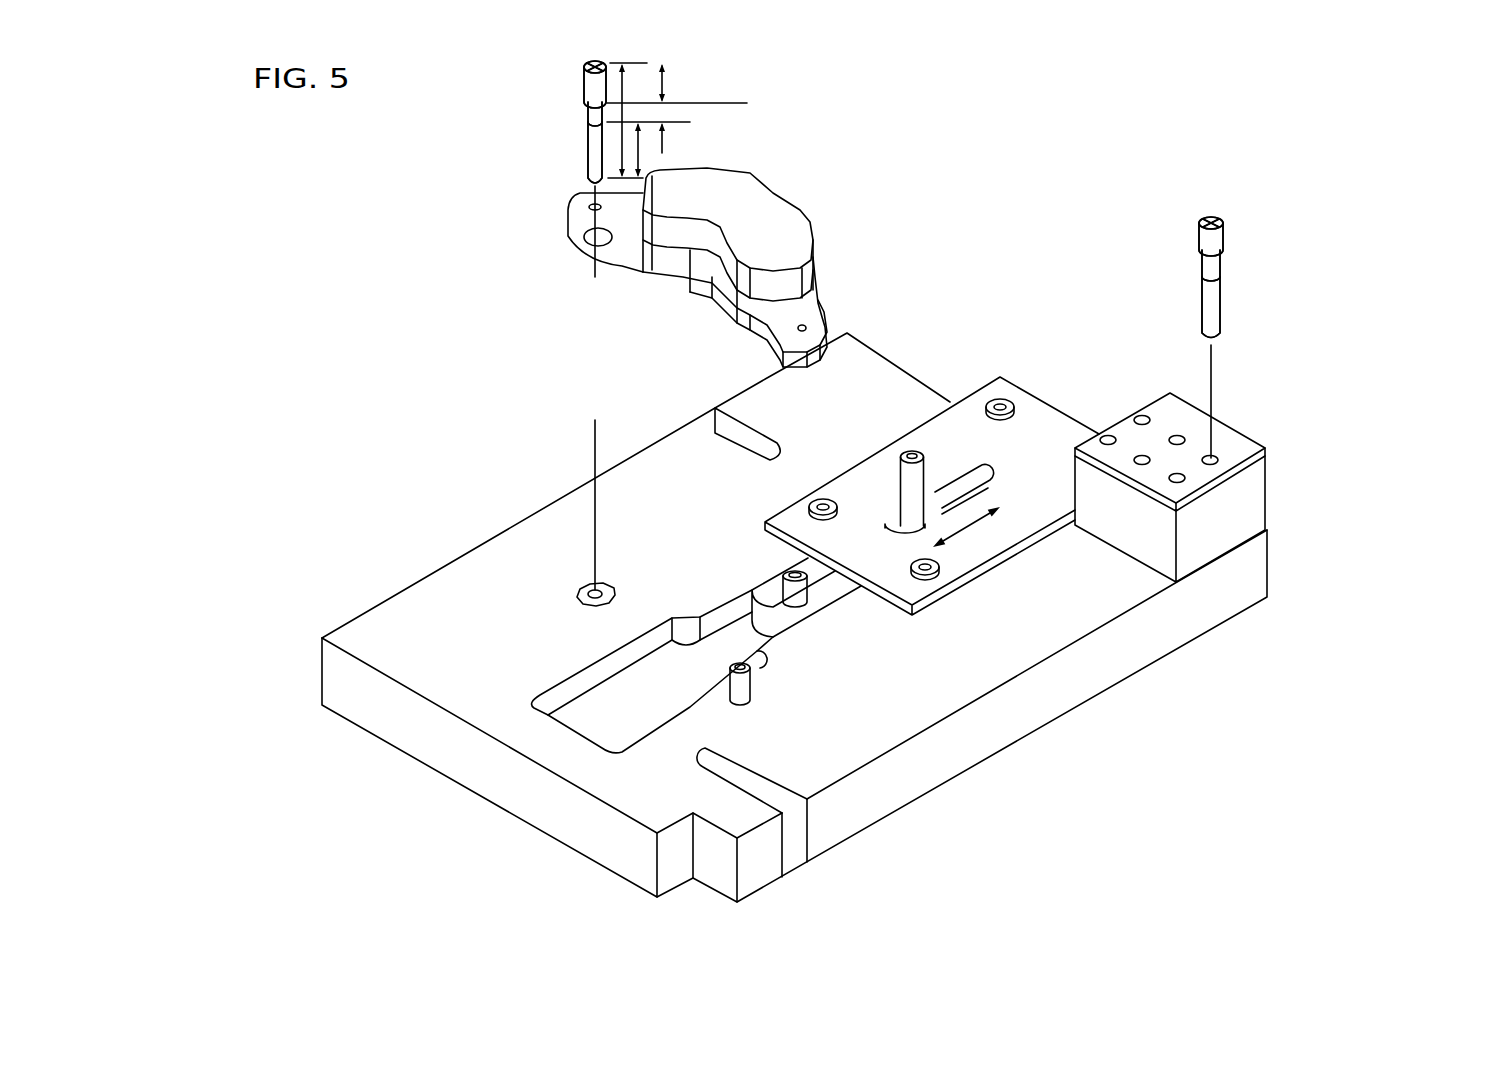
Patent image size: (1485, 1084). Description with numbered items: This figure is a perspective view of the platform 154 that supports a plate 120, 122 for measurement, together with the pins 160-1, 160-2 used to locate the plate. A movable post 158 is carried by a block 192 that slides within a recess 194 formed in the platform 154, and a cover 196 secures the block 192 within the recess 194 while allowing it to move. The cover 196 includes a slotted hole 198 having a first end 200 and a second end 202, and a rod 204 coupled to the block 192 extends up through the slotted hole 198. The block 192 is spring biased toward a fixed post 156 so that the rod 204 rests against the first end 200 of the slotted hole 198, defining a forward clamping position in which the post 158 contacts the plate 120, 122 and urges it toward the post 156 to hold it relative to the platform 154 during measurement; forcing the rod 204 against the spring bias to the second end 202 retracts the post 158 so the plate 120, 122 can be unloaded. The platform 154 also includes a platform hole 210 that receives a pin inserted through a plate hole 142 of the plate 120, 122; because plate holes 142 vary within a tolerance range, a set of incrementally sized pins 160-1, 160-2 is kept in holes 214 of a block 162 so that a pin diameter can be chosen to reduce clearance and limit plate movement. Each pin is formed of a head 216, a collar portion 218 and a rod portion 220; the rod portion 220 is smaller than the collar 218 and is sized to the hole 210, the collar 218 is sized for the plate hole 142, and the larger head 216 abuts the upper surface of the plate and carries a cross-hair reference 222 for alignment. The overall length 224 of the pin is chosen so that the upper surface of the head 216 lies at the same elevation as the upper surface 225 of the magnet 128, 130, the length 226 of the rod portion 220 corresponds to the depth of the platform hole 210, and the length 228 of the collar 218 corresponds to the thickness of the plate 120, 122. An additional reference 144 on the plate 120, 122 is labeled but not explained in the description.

The platform 154 is at (428, 617).
The post 156 is at (745, 688).
The movable post 158 is at (797, 574).
The pin 160-1 is at (620, 53).
The pin 160-2 is at (1292, 170).
The block 162 is at (1278, 492).
The plate 120 is at (796, 308).
The plate 122 is at (796, 308).
The magnet 128 is at (726, 267).
The magnet 130 is at (726, 267).
The plate hole 142 is at (590, 210).
The hole 144 is at (808, 328).
The block 192 is at (828, 590).
The recess 194 is at (617, 753).
The cover 196 is at (963, 412).
The slotted hole 198 is at (947, 513).
The first end 200 is at (893, 525).
The second end 202 is at (990, 473).
The rod 204 is at (908, 440).
The platform hole 210 is at (588, 590).
The holes 214 is at (1213, 457).
The head 216 is at (587, 92).
The collar portion 218 is at (591, 113).
The rod portion 220 is at (588, 178).
The cross-hair reference 222 is at (587, 63).
The length of pin 224 is at (588, 148).
The upper surface of magnet 225 is at (728, 209).
The length of rod portion 226 is at (662, 153).
The length of collar 228 is at (677, 77).